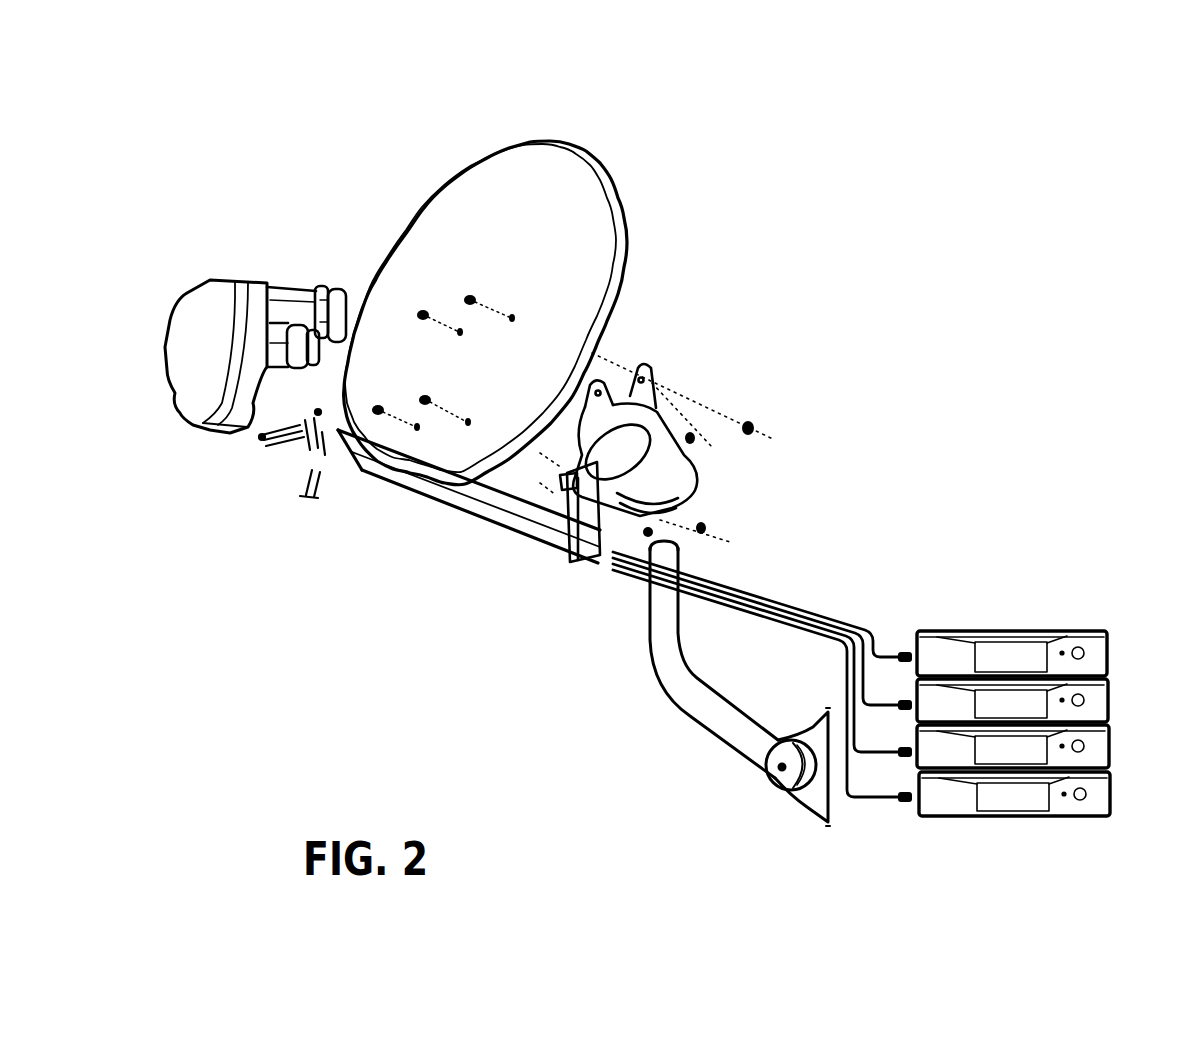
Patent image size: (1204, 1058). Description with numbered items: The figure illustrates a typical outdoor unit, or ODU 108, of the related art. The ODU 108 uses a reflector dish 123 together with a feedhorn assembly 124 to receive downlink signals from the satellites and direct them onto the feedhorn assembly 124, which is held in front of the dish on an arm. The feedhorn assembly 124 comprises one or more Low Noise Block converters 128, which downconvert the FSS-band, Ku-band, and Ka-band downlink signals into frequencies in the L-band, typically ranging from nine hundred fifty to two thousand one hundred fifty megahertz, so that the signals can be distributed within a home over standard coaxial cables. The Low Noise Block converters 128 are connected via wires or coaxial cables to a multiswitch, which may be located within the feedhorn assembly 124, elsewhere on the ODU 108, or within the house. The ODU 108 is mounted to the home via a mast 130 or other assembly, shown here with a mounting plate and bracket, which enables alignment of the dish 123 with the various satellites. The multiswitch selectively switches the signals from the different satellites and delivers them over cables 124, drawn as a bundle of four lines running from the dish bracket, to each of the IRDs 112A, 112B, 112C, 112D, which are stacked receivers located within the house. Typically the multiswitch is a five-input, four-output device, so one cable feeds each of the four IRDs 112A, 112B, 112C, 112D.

The ODU 108 is at (545, 80).
The reflector dish 123 is at (440, 183).
The feedhorn assembly 124 is at (208, 275).
The Low Noise Block converter 128 is at (295, 282).
The mast 130 is at (695, 690).
The IRD 112A is at (1063, 630).
The IRD 112B is at (1110, 697).
The IRD 112C is at (1110, 748).
The IRD 112D is at (1110, 790).